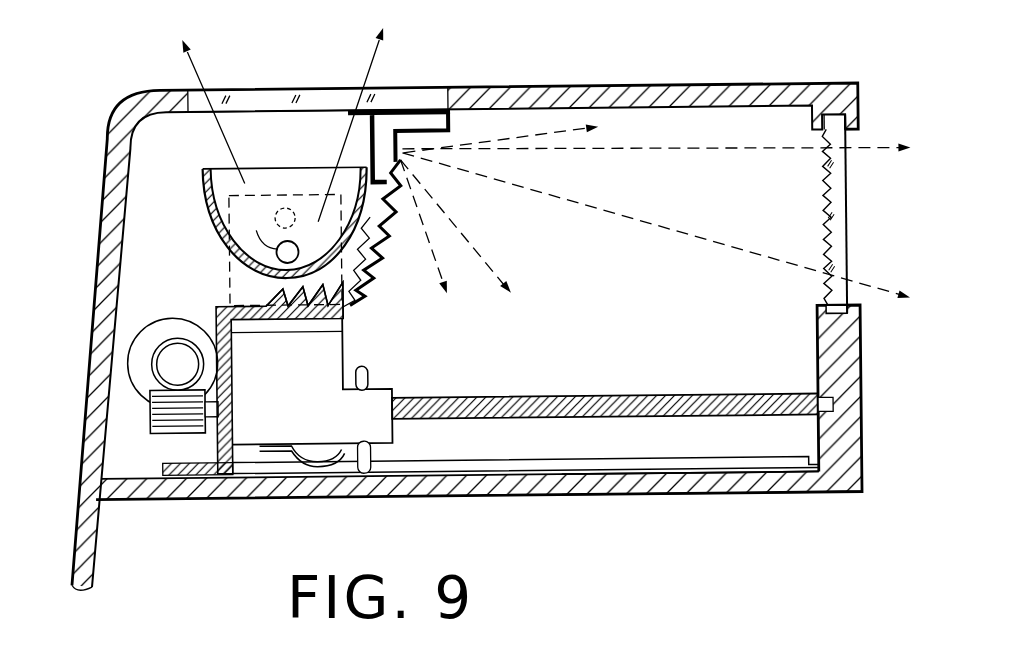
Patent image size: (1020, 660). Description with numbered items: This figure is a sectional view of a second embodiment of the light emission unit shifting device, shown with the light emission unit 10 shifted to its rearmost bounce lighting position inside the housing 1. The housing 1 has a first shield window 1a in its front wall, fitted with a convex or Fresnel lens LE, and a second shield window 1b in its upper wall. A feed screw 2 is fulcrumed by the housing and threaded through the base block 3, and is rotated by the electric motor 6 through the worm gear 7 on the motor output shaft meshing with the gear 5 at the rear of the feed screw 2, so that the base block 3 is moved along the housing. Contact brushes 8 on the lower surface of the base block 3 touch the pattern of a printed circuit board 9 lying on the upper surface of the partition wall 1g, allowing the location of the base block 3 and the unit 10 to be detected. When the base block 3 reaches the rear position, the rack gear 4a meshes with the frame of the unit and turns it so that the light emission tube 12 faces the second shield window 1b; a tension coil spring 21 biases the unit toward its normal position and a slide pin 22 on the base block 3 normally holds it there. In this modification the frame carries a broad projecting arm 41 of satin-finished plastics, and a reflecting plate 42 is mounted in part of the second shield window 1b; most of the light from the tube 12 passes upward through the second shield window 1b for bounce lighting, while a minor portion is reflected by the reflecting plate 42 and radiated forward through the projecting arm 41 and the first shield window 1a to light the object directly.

The housing 1 is at (704, 84).
The first shield window 1a is at (860, 132).
The second shield window 1b is at (284, 96).
The partition wall 1g is at (755, 496).
The Fresnel lens LE is at (847, 196).
The feed screw 2 is at (661, 419).
The base block 3 is at (256, 430).
The rack gear 4a is at (350, 321).
The gear 5 is at (160, 437).
The electric motor 6 is at (161, 313).
The worm gear 7 is at (182, 334).
The contact brushes 8 is at (305, 458).
The printed circuit board 9 is at (578, 468).
The light emission unit 10 is at (204, 200).
The light emission tube 12 is at (285, 249).
The tension coil spring 21 is at (383, 234).
The slide pin 22 is at (369, 377).
The projecting arm 41 is at (434, 126).
The reflecting plate 42 is at (376, 144).